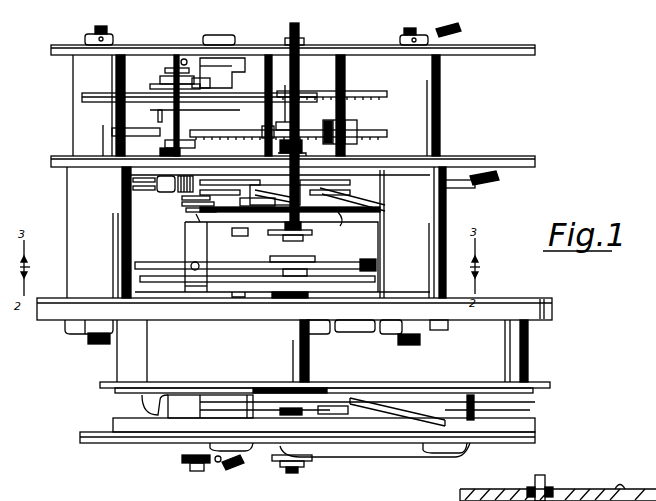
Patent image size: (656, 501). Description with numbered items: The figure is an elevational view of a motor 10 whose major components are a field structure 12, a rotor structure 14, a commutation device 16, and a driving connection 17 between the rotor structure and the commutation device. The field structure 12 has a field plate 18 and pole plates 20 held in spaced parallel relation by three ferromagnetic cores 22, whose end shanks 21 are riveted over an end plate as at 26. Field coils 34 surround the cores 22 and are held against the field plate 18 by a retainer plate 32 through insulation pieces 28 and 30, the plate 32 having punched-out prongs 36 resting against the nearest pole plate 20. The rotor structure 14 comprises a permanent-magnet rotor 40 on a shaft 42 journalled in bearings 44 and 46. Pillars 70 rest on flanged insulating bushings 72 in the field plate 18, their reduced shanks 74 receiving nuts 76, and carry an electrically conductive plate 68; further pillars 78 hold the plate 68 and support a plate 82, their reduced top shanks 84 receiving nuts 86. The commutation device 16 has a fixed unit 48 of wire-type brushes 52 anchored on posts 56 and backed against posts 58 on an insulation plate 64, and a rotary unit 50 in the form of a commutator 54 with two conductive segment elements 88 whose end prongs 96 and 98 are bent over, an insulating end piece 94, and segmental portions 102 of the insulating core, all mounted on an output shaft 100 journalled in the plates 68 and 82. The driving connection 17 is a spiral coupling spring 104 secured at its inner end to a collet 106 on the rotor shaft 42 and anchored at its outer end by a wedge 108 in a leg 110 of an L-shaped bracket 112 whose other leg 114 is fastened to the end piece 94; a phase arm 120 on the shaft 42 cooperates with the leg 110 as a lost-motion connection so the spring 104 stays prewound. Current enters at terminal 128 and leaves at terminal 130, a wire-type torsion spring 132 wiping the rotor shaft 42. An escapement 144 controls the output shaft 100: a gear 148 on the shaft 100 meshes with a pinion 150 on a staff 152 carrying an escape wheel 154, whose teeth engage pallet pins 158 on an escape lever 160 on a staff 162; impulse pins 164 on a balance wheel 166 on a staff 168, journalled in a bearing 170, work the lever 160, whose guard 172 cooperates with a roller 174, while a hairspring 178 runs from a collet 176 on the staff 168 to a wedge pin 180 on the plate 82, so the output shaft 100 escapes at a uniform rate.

The motor 10 is at (485, 142).
The field structure 12 is at (536, 368).
The rotor structure 14 is at (316, 412).
The commutation device 16 is at (309, 239).
The driving connection 17 is at (180, 263).
The field plate 18 is at (498, 310).
The pole plates 20 is at (406, 457).
The end shanks 21 is at (198, 472).
The ferromagnetic cores 22 is at (213, 408).
The rivet 26 is at (440, 451).
The insulation piece 28 is at (238, 320).
The insulation piece 30 is at (215, 386).
The retainer plate 32 is at (262, 388).
The field coils 34 is at (118, 362).
The prongs 36 is at (142, 406).
The rotor 40 is at (276, 414).
The shaft 42 is at (292, 474).
The bearing 44 is at (270, 295).
The bearing 46 is at (280, 465).
The fixed unit 48 is at (186, 210).
The rotary unit 50 is at (316, 231).
The brushes 52 is at (277, 207).
The commutator 54 is at (352, 199).
The posts 56 is at (249, 228).
The posts 58 is at (143, 196).
The insulation plate 64 is at (383, 172).
The plate 68 is at (450, 162).
The pillars 70 is at (72, 206).
The flanged insulating bushings 72 is at (88, 296).
The reduced shanks 74 is at (94, 345).
The nuts 76 is at (72, 332).
The pillars 78 is at (73, 125).
The plate 82 is at (502, 53).
The reduced top shanks 84 is at (105, 28).
The nuts 86 is at (114, 39).
The conductive segment elements 88 is at (270, 195).
The insulating end piece 94 is at (246, 228).
The end prongs 96 is at (512, 495).
The end prongs 98 is at (268, 236).
The shaft 100 is at (302, 78).
The segmental portions 102 is at (266, 60).
The coupling spring 104 is at (333, 270).
The collet 106 is at (278, 236).
The wedge 108 is at (192, 263).
The leg 110 is at (190, 284).
The L-shaped bracket 112 is at (190, 229).
The leg 114 is at (222, 224).
The phase arm 120 is at (333, 294).
The terminal 128 is at (232, 470).
The terminal 130 is at (446, 35).
The wire-type torsion spring 132 is at (230, 58).
The escapement 144 is at (116, 133).
The gear 148 is at (383, 136).
The pinion 150 is at (357, 126).
The staff 152 is at (347, 78).
The escape wheel 154 is at (363, 97).
The pallet pins 158 is at (289, 95).
The escape lever 160 is at (195, 96).
The staff 162 is at (222, 73).
The impulse pins 164 is at (158, 115).
The balance wheel 166 is at (95, 93).
The staff 168 is at (172, 143).
The bearing 170 is at (240, 148).
The guard 172 is at (232, 133).
The roller 174 is at (157, 121).
The collet 176 is at (162, 84).
The hairspring 178 is at (164, 70).
The wedge pin 180 is at (198, 86).